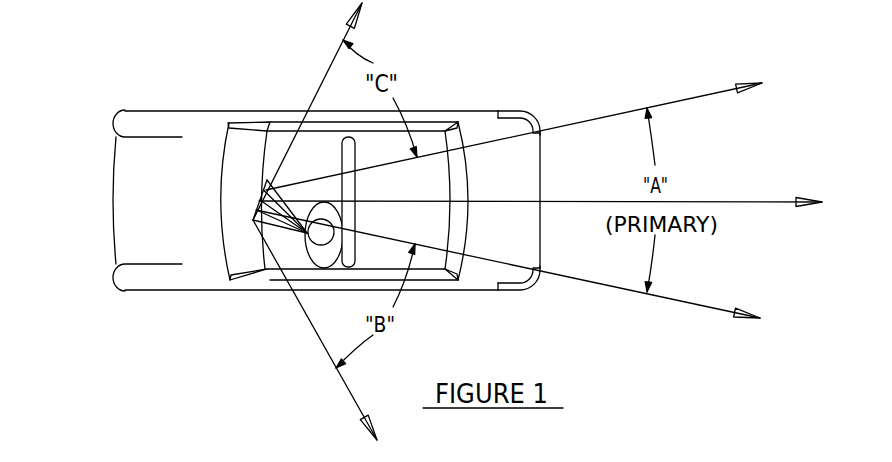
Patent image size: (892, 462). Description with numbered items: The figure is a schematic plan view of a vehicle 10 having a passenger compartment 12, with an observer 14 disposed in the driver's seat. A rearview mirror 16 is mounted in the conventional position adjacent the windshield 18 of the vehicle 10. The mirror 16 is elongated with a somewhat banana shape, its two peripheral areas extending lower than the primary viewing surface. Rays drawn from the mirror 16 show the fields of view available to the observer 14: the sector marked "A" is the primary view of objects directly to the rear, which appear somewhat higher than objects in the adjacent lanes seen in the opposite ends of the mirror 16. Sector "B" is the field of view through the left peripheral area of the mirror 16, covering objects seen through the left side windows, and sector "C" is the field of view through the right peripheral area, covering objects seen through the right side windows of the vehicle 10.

The vehicle 10 is at (157, 111).
The passenger compartment 12 is at (320, 150).
The observer 14 is at (311, 262).
The rearview mirror 16 is at (253, 220).
The windshield 18 is at (230, 236).